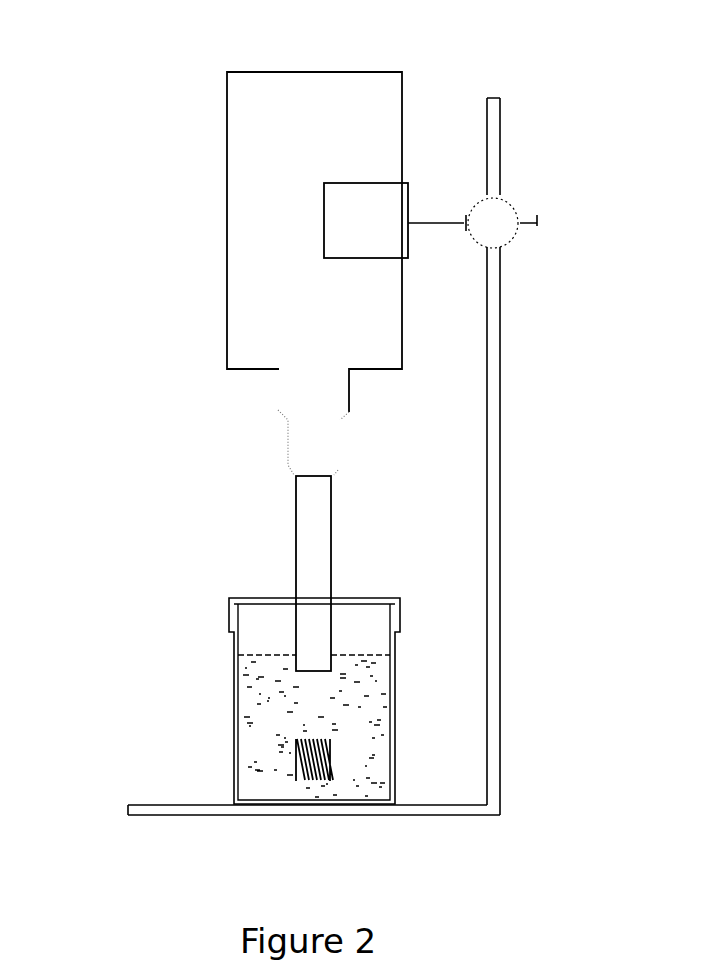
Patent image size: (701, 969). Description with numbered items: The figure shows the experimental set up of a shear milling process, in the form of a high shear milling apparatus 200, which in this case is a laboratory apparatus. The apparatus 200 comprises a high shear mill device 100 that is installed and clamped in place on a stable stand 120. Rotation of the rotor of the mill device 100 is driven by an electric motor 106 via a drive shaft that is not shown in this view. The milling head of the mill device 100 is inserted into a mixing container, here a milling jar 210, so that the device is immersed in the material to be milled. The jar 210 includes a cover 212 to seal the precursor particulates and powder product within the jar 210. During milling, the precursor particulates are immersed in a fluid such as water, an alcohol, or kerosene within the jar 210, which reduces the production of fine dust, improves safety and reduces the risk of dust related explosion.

The high shear milling apparatus 200 is at (146, 88).
The stable stand 120 is at (503, 130).
The electric motor 106 is at (224, 275).
The high shear mill device 100 is at (290, 498).
The cover 212 is at (226, 595).
The milling jar 210 is at (230, 710).